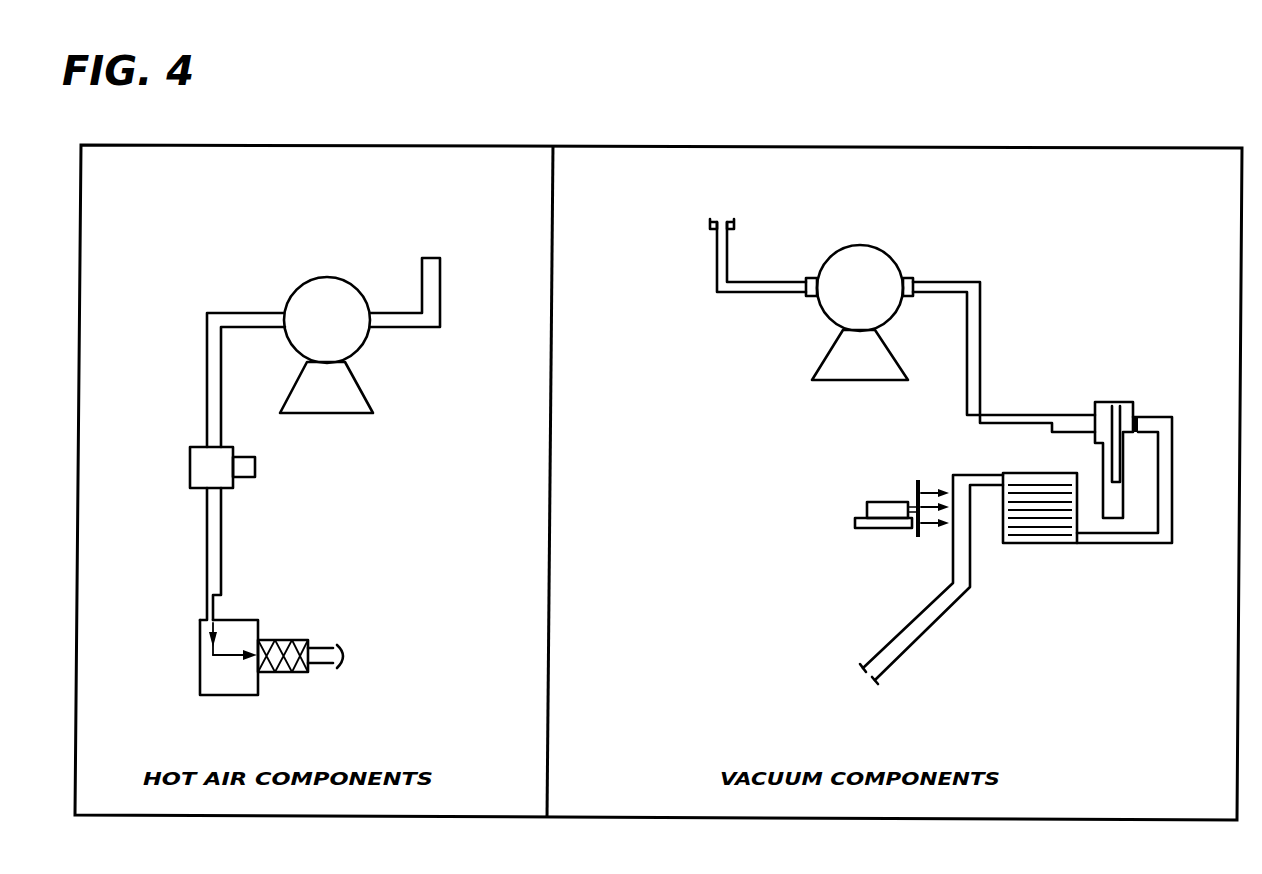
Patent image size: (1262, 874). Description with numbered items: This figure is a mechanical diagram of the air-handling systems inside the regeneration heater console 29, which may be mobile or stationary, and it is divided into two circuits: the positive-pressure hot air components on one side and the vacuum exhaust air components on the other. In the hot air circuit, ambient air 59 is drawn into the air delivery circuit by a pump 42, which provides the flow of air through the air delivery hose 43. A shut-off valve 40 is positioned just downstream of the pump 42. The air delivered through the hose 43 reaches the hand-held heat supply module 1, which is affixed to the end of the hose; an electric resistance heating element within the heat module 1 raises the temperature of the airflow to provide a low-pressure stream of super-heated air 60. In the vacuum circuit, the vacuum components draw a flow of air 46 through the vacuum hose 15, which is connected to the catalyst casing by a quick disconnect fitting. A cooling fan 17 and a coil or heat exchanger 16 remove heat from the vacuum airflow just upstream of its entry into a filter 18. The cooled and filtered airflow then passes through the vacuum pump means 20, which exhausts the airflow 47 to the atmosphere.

The regeneration heater console 29 is at (340, 145).
The pump 42 is at (327, 277).
The air delivery hose 43 is at (229, 313).
The ambient air 59 is at (431, 240).
The shut-off valve 40 is at (255, 463).
The heat supply module 1 is at (310, 640).
The super-heated air 60 is at (355, 657).
The vacuum pump means 20 is at (893, 257).
The exhaust airflow 47 is at (723, 222).
The filter 18 is at (1135, 402).
The coil or heat exchanger 16 is at (1035, 545).
The vacuum hose 15 is at (905, 633).
The flow of air 46 is at (860, 686).
The cooling fan 17 is at (855, 523).